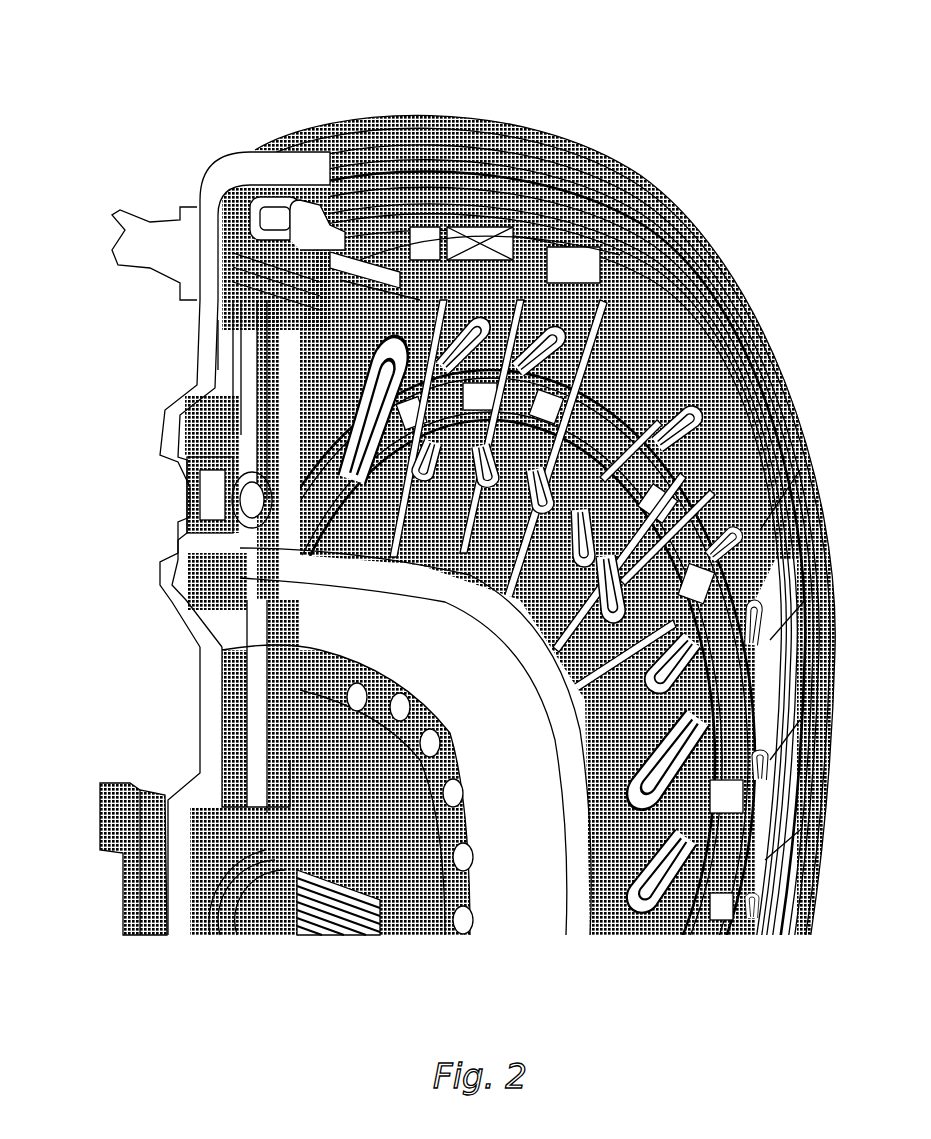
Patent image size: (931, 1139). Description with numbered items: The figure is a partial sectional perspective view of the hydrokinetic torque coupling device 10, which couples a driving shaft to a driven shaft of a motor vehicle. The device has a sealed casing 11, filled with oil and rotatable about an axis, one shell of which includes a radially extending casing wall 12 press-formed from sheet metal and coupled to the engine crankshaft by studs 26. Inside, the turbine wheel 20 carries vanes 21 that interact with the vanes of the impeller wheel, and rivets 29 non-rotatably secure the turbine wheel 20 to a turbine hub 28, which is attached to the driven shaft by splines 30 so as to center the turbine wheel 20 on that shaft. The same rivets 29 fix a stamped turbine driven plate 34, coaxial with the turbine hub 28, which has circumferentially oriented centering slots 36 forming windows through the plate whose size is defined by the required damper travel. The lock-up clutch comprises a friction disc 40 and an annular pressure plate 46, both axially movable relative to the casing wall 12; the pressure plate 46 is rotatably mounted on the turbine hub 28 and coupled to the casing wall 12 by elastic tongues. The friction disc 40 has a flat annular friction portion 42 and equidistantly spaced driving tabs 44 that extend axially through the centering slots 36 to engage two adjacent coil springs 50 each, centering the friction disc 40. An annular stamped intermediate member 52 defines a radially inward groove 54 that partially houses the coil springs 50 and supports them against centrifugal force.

The hydrokinetic torque coupling device 10 is at (700, 167).
The sealed casing 11 is at (203, 163).
The casing wall 12 is at (210, 690).
The turbine wheel 20 is at (187, 590).
The vanes 21 is at (752, 430).
The studs 26 is at (125, 234).
The turbine hub 28 is at (320, 757).
The rivets 29 is at (290, 693).
The splines 30 is at (330, 933).
The turbine driven plate 34 is at (277, 360).
The centering slots 36 is at (503, 217).
The friction disc 40 is at (216, 345).
The friction portion 42 is at (213, 383).
The driving tabs 44 is at (377, 277).
The pressure plate 46 is at (250, 443).
The coil springs 50 is at (443, 250).
The intermediate member 52 is at (256, 200).
The groove 54 is at (300, 207).